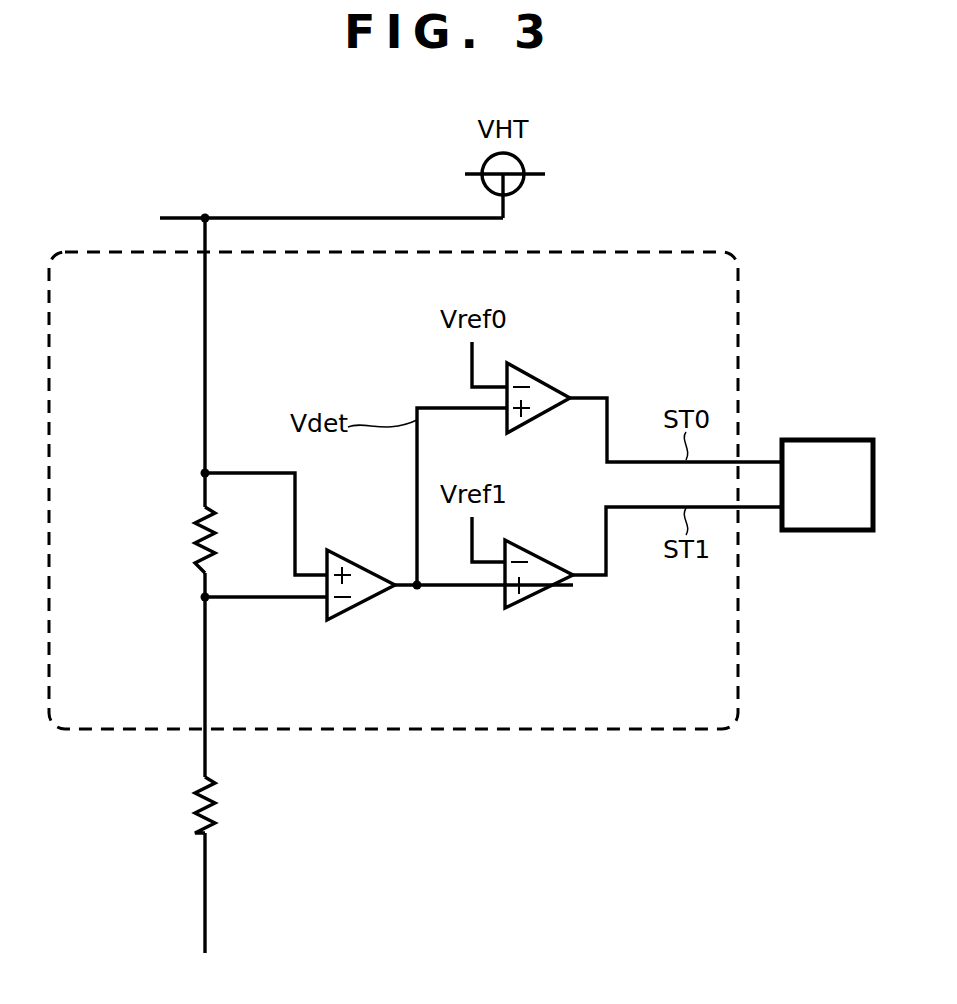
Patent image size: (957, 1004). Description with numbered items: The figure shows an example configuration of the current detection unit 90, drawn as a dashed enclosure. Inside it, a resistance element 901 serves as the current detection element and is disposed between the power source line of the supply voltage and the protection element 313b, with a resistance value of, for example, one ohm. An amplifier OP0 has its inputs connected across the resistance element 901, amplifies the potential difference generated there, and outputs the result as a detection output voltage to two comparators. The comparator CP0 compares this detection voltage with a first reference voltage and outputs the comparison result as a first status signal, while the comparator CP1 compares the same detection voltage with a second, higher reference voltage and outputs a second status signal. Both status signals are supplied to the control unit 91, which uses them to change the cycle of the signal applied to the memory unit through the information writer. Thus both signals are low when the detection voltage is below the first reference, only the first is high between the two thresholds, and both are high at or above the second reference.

The resistance element 901 is at (166, 528).
The protection element 313b is at (234, 807).
The current detection unit 90 is at (510, 731).
The control unit 91 is at (813, 503).
The amplifier OP0 is at (354, 626).
The comparator CP0 is at (592, 348).
The comparator CP1 is at (544, 628).